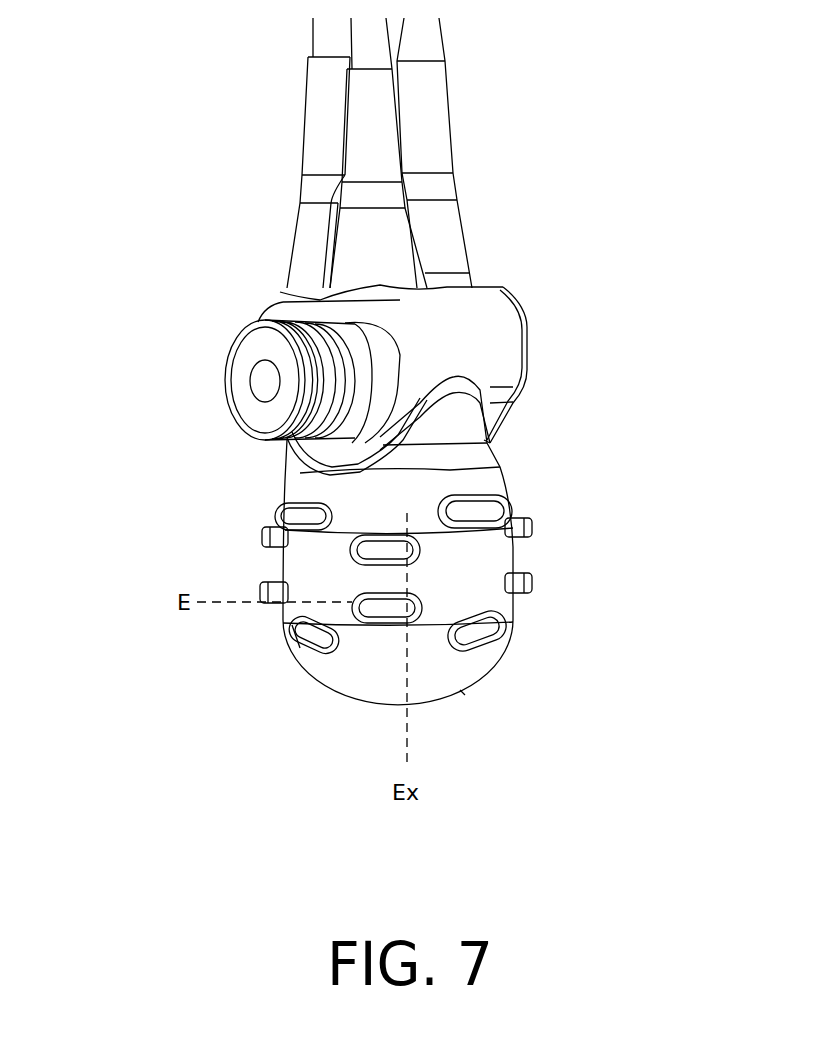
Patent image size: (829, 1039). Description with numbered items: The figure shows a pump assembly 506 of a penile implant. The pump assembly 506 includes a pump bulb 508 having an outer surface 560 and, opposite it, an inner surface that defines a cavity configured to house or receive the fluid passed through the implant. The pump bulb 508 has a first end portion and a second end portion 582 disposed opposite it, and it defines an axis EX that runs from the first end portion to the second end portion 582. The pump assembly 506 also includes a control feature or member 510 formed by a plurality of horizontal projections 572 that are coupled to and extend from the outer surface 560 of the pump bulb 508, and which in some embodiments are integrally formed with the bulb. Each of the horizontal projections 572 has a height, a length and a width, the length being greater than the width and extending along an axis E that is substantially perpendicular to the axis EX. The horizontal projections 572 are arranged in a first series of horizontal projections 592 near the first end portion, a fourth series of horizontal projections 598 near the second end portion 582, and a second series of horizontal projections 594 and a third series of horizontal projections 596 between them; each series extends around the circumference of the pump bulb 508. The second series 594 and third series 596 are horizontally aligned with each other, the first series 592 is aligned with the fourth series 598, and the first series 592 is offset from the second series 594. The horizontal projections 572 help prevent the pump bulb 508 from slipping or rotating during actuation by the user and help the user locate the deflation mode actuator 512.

The pump assembly 506 is at (127, 392).
The pump bulb 508 is at (497, 640).
The control feature or member 510 is at (532, 530).
The deflation mode actuator 512 is at (227, 372).
The outer surface 560 is at (498, 483).
The horizontal projections 572 is at (283, 500).
The second end portion 582 is at (487, 443).
The first series of horizontal projections 592 is at (295, 648).
The second series of horizontal projections 594 is at (265, 590).
The third series of horizontal projections 596 is at (267, 530).
The fourth series of horizontal projections 598 is at (290, 477).